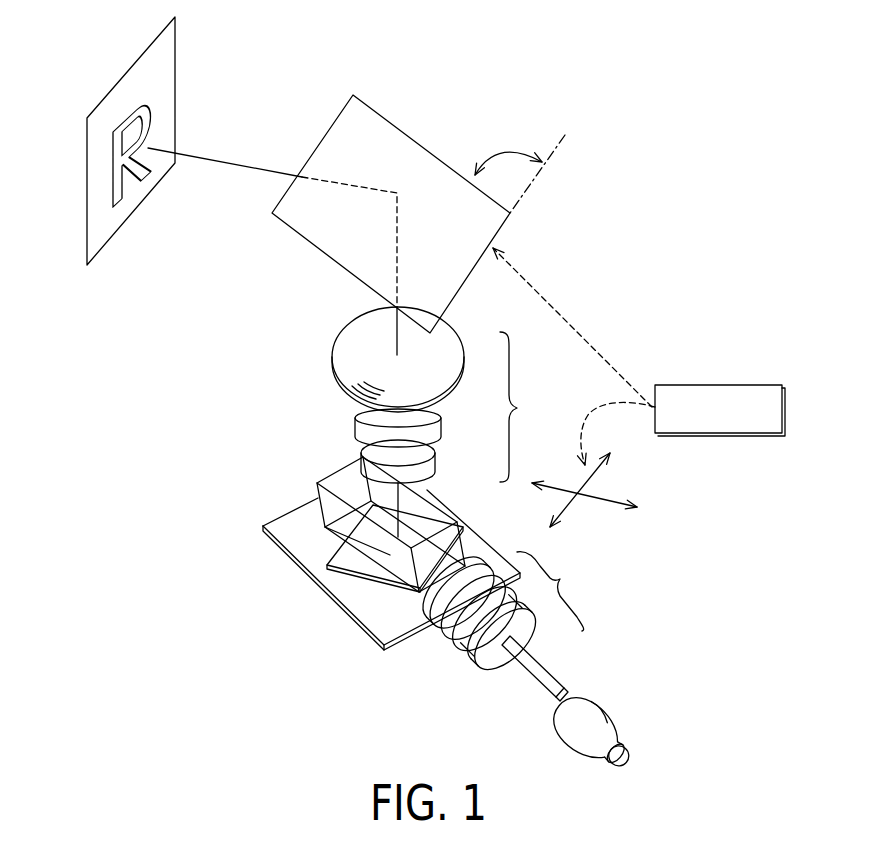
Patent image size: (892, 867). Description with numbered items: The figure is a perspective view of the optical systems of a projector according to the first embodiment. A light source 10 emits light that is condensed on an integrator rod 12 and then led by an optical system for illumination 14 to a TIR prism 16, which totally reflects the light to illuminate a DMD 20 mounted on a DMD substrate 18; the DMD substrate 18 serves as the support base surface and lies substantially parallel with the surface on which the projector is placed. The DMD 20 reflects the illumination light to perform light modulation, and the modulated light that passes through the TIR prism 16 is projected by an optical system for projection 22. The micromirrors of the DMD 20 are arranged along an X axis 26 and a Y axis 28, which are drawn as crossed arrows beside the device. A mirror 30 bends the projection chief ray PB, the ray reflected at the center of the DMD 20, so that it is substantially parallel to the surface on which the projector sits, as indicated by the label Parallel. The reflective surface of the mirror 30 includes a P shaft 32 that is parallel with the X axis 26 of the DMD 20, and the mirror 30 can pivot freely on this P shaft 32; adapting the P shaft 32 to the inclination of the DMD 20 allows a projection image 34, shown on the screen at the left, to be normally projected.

The light source 10 is at (623, 722).
The integrator rod 12 is at (557, 673).
The optical system for illumination 14 is at (560, 580).
The TIR prism 16 is at (337, 477).
The DMD substrate 18 is at (342, 610).
The DMD 20 is at (327, 553).
The optical system for projection 22 is at (517, 408).
The X axis 26 is at (565, 510).
The Y axis 28 is at (600, 495).
The mirror 30 is at (363, 102).
The P shaft 32 is at (550, 157).
The projection image 34 is at (115, 85).
The projection chief ray PB is at (232, 158).
The parallel light box Parallel is at (639, 342).